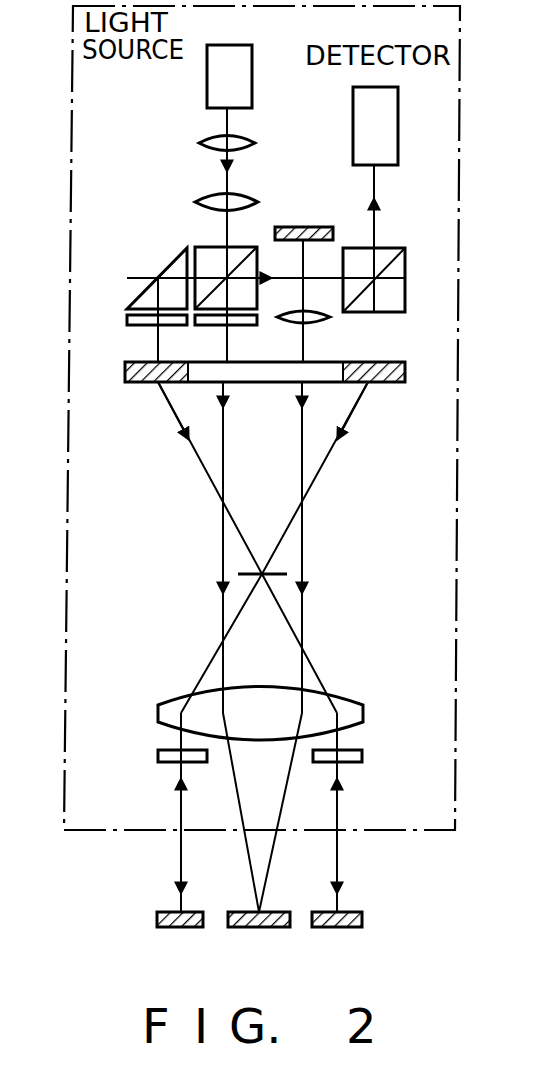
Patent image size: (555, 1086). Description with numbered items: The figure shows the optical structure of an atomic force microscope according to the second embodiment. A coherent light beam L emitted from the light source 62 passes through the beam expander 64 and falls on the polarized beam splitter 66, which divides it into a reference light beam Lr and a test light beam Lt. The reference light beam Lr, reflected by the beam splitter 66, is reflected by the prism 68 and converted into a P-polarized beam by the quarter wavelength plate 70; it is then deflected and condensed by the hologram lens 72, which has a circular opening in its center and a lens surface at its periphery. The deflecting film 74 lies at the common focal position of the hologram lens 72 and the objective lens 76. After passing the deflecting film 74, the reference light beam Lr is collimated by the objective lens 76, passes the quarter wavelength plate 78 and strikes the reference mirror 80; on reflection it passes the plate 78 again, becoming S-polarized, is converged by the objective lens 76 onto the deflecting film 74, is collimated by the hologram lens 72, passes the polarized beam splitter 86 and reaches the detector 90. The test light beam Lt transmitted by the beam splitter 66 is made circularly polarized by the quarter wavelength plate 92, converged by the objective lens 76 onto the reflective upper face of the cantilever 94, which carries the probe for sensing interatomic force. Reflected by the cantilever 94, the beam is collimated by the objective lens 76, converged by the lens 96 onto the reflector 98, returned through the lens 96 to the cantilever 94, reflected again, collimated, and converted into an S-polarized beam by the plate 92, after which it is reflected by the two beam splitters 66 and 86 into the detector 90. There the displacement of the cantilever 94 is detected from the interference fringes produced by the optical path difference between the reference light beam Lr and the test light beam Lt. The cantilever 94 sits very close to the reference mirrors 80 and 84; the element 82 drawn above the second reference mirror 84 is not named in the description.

The light source 62 is at (207, 73).
The beam expander 64 is at (186, 125).
The coherent light beam L is at (230, 154).
The polarized beam splitter 66 is at (216, 246).
The prism 68 is at (148, 287).
The quarter wavelength plate 70 is at (143, 329).
The quarter wavelength plate 92 is at (243, 329).
The reflector 98 is at (313, 227).
The lens 96 is at (310, 324).
The polarized beam splitter 86 is at (394, 312).
The detector 90 is at (398, 94).
The hologram lens 72 is at (132, 382).
The deflecting film 74 is at (278, 568).
The reference light beam Lr is at (208, 473).
The test light beam Lt is at (222, 542).
The objective lens 76 is at (346, 708).
The quarter-wave plate 82 is at (162, 750).
The quarter wavelength plate 78 is at (357, 750).
The reference mirror 84 is at (167, 910).
The cantilever 94 is at (273, 910).
The reference mirror 80 is at (353, 910).